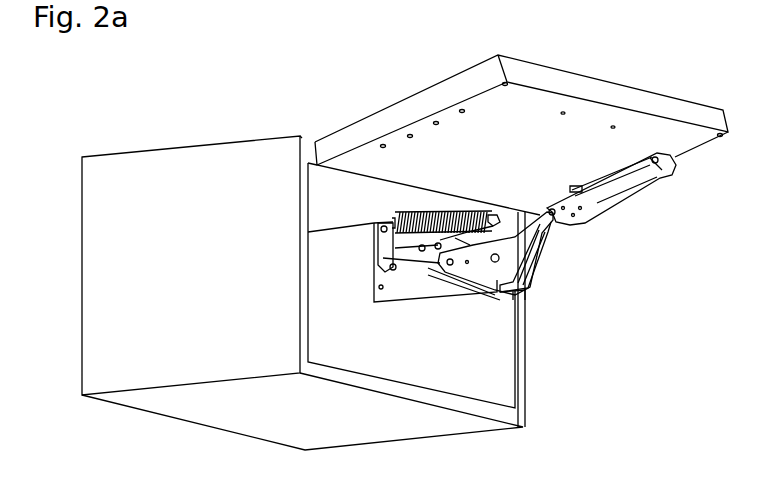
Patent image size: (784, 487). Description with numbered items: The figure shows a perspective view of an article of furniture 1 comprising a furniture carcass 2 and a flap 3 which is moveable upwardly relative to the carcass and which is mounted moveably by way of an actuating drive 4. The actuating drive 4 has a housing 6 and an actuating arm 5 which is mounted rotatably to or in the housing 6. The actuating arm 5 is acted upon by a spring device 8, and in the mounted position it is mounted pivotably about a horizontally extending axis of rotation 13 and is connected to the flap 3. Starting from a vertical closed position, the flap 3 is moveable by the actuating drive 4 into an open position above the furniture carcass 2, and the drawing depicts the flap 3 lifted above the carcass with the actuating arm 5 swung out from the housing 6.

The article of furniture 1 is at (553, 392).
The furniture carcass 2 is at (98, 352).
The flap 3 is at (648, 102).
The actuating drive 4 is at (550, 280).
The actuating arm 5 is at (625, 178).
The housing 6 is at (410, 298).
The spring device 8 is at (387, 240).
The axis of rotation 13 is at (567, 232).